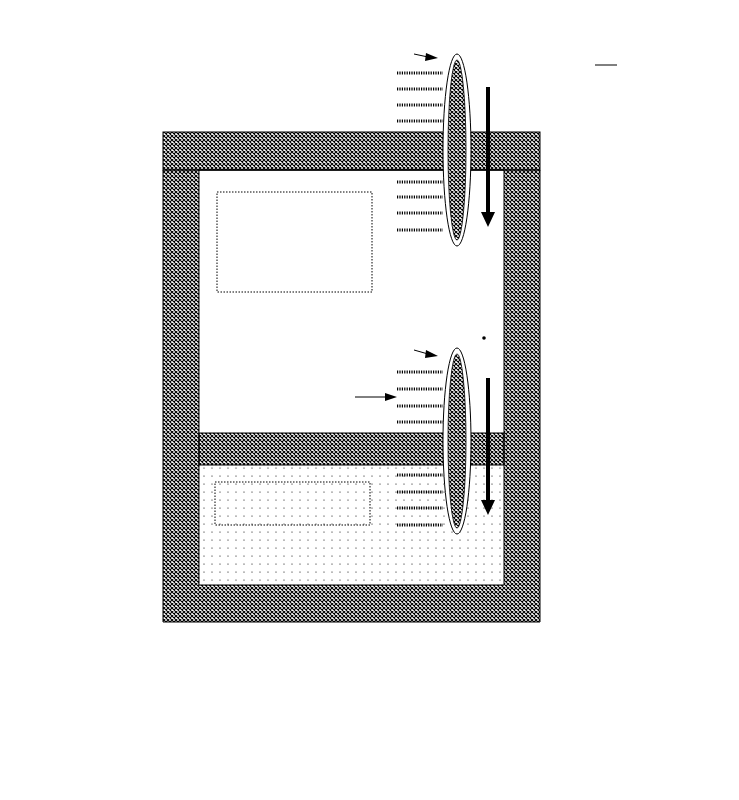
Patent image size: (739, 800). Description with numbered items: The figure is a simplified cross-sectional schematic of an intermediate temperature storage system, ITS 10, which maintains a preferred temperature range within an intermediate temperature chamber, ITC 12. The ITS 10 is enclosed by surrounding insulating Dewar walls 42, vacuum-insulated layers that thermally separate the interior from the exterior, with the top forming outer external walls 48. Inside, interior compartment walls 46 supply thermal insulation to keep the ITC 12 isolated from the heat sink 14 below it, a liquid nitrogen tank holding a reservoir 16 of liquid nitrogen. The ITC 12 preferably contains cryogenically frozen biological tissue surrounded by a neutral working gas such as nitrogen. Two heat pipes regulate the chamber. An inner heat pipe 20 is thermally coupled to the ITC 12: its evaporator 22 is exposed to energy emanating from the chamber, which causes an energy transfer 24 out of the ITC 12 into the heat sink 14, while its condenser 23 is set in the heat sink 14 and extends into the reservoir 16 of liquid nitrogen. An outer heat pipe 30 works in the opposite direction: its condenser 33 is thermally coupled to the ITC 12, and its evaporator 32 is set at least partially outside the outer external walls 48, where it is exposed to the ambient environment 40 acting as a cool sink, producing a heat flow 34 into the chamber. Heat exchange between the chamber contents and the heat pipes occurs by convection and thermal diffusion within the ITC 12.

The intermediate temperature storage system 10 is at (82, 271).
The intermediate temperature chamber 12 is at (243, 331).
The heat sink 14 is at (207, 539).
The reservoir of liquid nitrogen 16 is at (250, 558).
The inner heat pipe 20 is at (493, 441).
The evaporator of inner heat pipe 22 is at (458, 382).
The condenser of inner heat pipe 23 is at (465, 532).
The energy transfer 24 is at (507, 366).
The outer heat pipe 30 is at (449, 131).
The evaporator of outer heat pipe 32 is at (462, 60).
The condenser of outer heat pipe 33 is at (465, 240).
The heat flow Q1 through outer heat pipe 34 is at (493, 178).
The ambient environment 40 is at (606, 53).
The Dewar walls 42 is at (163, 181).
The interior compartment walls 46 is at (243, 432).
The outer external walls 48 is at (229, 133).